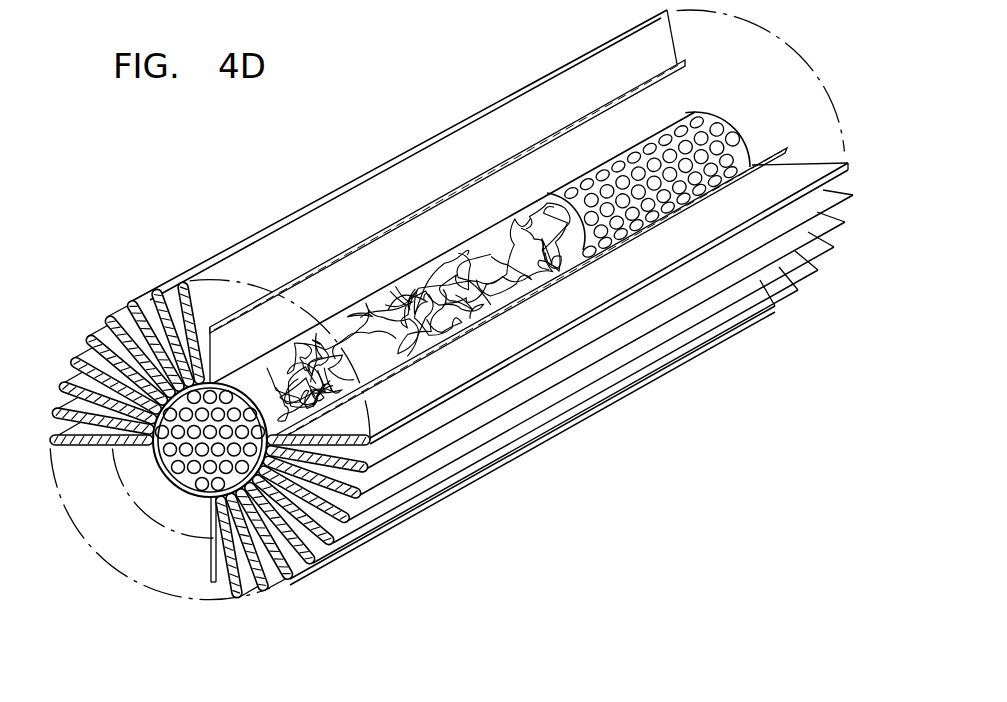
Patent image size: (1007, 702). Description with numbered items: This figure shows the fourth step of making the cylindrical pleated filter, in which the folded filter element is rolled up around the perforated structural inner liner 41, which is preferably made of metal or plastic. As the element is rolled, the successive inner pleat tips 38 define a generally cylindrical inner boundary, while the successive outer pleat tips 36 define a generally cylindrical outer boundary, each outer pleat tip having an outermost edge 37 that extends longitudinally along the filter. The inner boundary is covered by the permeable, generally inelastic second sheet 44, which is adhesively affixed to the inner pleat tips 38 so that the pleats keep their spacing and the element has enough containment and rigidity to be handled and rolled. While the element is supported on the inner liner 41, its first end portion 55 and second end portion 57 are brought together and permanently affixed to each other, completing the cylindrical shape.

The outer pleat tips 36 is at (135, 298).
The outermost edge 37 is at (258, 228).
The inner pleat tips 38 is at (156, 437).
The perforated structural inner liner 41 is at (722, 122).
The second sheet 44 is at (458, 270).
The first end portion 55 is at (817, 192).
The second end portion 57 is at (823, 168).